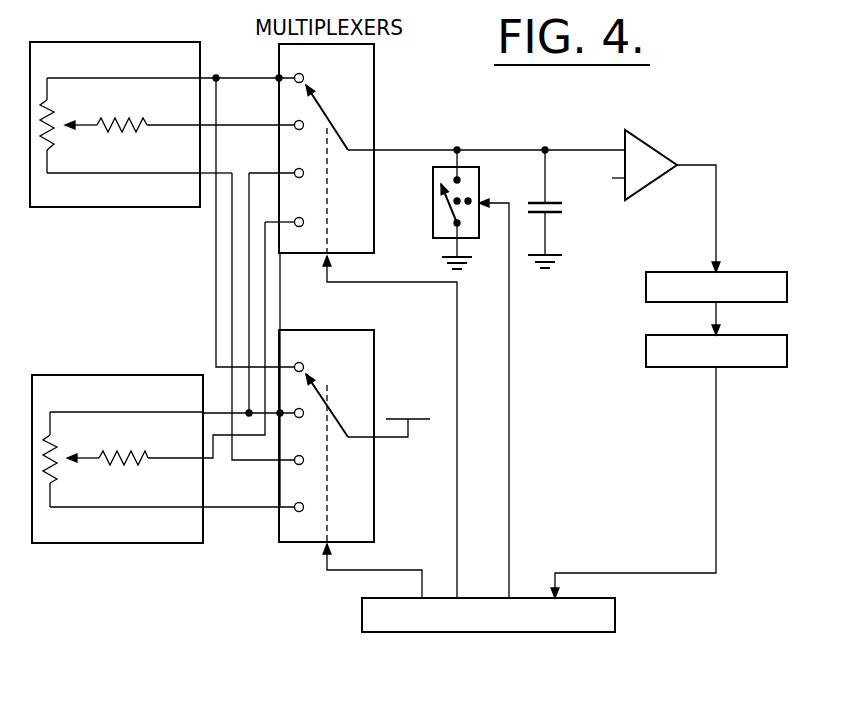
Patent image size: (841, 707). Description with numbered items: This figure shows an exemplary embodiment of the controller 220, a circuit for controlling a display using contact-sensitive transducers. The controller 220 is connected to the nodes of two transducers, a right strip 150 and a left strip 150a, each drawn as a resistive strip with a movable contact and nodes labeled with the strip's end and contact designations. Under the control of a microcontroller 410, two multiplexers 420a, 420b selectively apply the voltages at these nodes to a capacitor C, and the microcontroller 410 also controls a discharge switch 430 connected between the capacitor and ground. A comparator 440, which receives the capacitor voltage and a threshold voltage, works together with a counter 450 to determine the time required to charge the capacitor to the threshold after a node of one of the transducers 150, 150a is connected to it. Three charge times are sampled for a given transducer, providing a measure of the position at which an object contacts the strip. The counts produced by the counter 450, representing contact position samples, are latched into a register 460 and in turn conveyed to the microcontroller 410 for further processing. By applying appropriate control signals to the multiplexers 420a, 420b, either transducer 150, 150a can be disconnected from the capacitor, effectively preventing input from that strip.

The transducer 150 is at (123, 42).
The transducer 150a is at (123, 543).
The multiplexer 420a is at (377, 91).
The multiplexer 420b is at (378, 377).
The discharge switch 430 is at (433, 203).
The comparator 440 is at (658, 151).
The counter 450 is at (646, 290).
The register 460 is at (646, 355).
The microcontroller 410 is at (617, 613).
The controller 220 is at (433, 370).